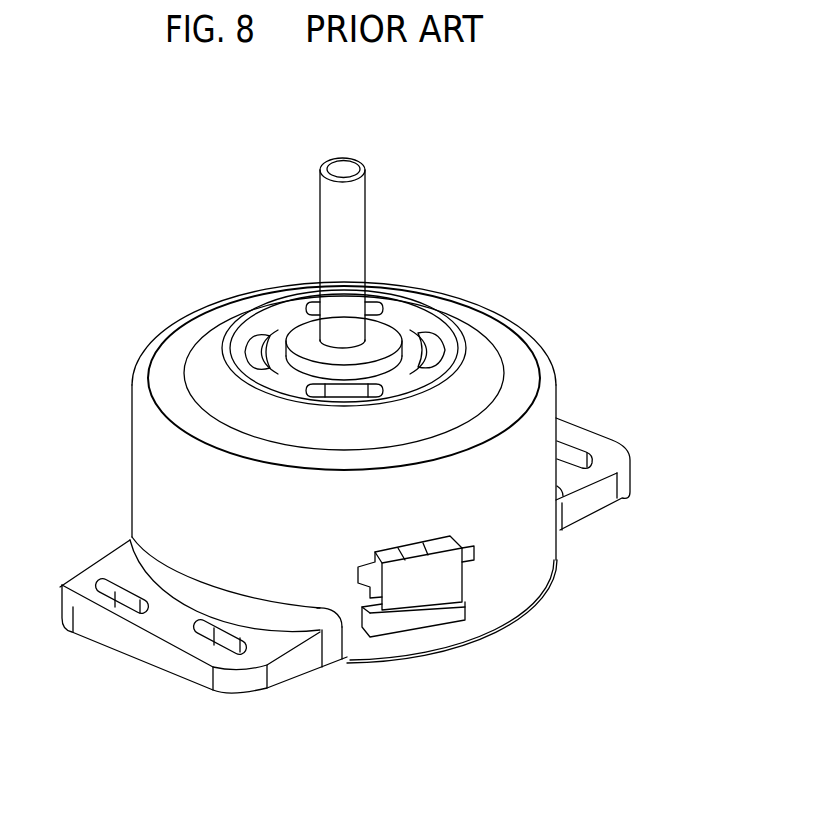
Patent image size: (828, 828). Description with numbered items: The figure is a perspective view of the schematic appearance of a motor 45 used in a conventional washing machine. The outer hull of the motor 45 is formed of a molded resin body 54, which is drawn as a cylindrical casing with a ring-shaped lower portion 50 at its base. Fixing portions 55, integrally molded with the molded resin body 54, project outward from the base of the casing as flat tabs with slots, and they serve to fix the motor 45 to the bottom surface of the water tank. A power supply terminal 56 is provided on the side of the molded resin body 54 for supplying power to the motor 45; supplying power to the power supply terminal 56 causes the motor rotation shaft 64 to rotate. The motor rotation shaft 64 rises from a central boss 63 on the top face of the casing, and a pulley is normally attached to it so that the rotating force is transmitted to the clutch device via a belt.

The motor 45 is at (478, 285).
The bottom rim of casing 50 is at (550, 590).
The molded resin body 54 is at (533, 485).
The fixing portions 55 is at (183, 638).
The power supply terminal 56 is at (417, 588).
The bearing boss 63 is at (385, 335).
The motor rotation shaft 64 is at (347, 215).